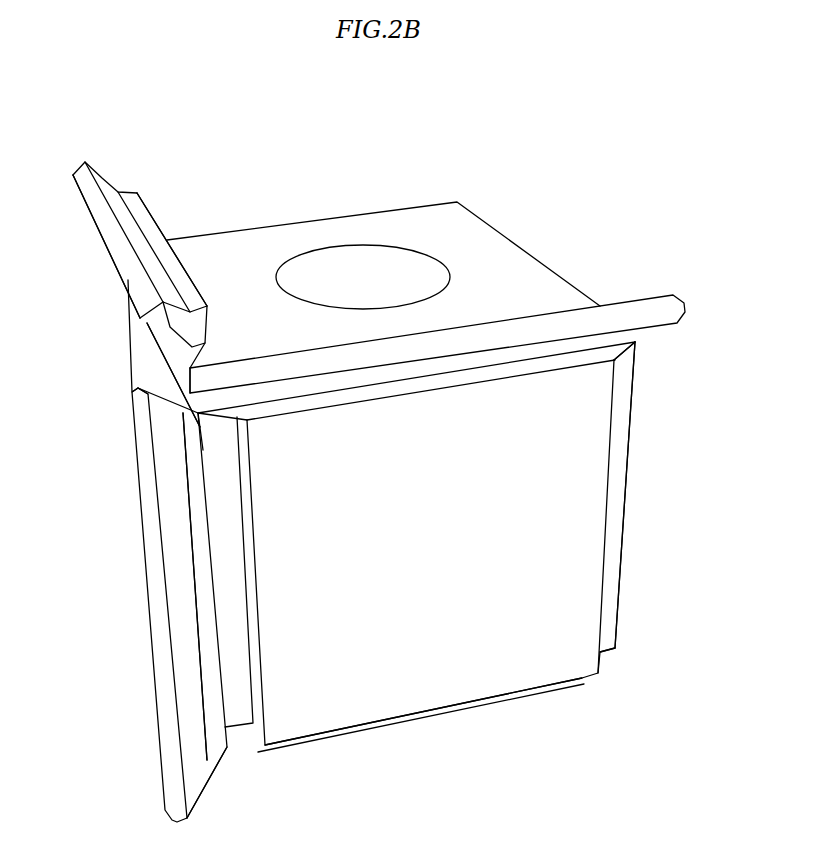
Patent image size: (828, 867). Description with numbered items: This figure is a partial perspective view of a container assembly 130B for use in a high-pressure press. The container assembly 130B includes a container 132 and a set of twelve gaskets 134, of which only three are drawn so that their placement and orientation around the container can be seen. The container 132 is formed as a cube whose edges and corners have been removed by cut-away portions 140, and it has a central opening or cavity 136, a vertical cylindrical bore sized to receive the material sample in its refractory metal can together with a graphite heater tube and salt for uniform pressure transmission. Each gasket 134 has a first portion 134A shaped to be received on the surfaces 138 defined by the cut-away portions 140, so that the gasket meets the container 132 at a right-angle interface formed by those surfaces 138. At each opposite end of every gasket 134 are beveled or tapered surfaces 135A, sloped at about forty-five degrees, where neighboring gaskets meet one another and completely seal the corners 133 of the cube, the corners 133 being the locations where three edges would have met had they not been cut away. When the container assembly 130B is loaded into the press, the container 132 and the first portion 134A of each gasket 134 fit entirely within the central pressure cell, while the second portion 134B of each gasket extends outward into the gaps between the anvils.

The container assembly 130B is at (170, 112).
The container 132 is at (408, 675).
The corners 133 is at (635, 343).
The gaskets 134 is at (89, 210).
The first portion 134A is at (152, 232).
The second portion 134B is at (105, 188).
The beveled or tapered surfaces 135A is at (167, 318).
The central opening or cavity 136 is at (381, 287).
The surfaces 138 is at (183, 370).
The cut-away portions 140 is at (242, 753).